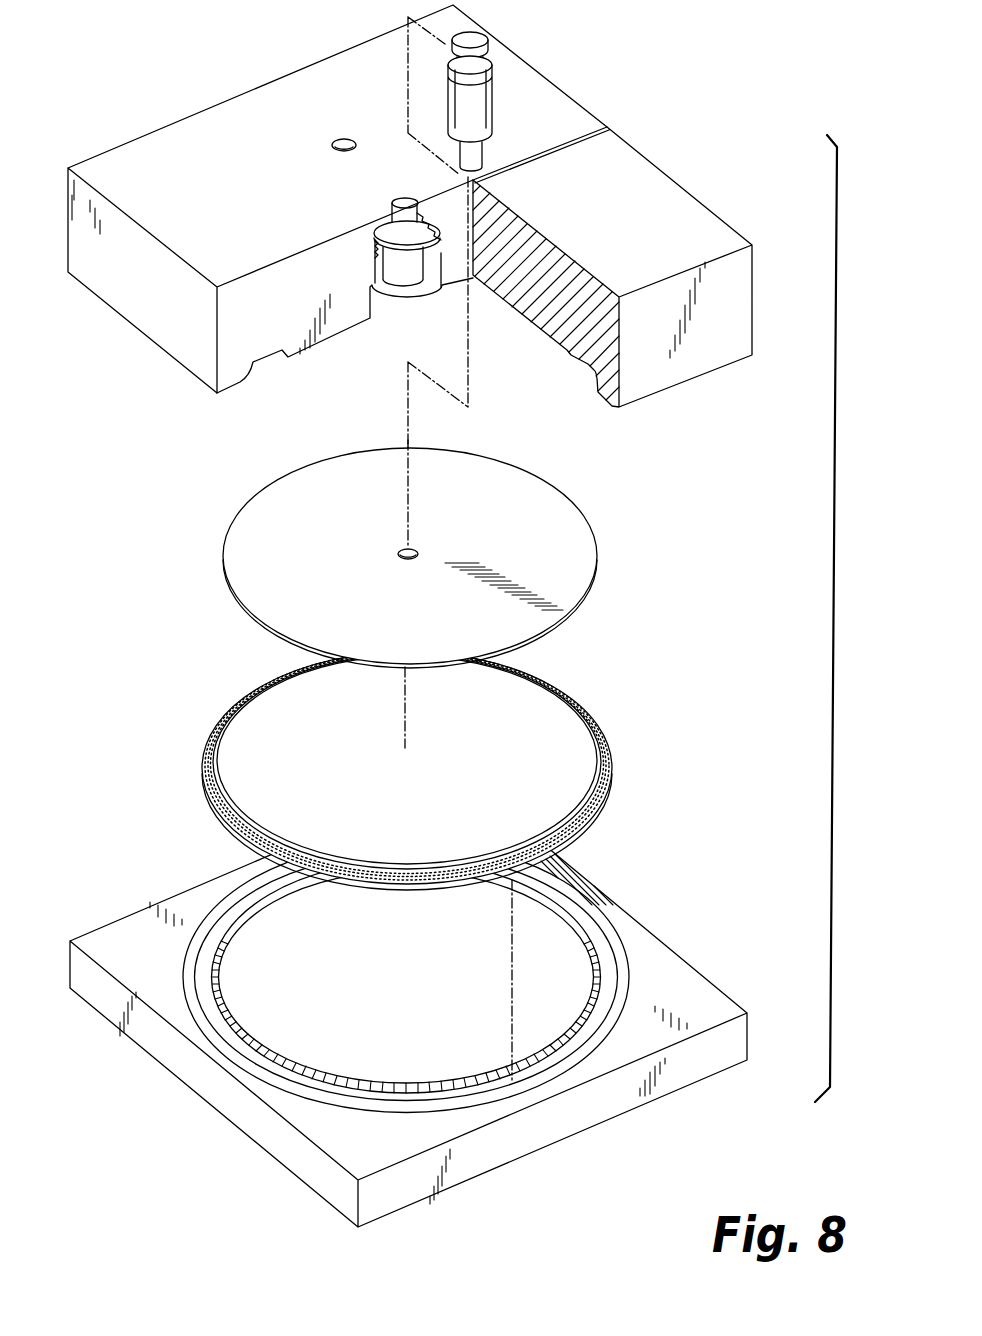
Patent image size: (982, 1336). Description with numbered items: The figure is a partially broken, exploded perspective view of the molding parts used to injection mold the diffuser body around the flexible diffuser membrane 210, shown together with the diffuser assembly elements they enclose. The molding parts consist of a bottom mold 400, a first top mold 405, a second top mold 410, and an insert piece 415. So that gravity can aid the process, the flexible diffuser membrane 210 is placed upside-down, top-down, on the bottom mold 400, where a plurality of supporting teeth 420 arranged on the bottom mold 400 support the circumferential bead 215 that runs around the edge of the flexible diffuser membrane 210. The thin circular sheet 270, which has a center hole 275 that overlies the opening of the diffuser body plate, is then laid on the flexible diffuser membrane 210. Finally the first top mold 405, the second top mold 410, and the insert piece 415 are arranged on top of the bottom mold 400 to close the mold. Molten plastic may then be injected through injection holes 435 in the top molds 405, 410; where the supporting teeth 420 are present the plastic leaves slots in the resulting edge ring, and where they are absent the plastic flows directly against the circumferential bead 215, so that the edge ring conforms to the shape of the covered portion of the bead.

The bottom mold 400 is at (408, 1000).
The first top mold 405 is at (337, 199).
The second top mold 410 is at (620, 222).
The insert piece 415 is at (489, 88).
The supporting teeth 420 is at (375, 1080).
The injection holes 435 is at (344, 138).
The thin circular sheet 270 is at (410, 554).
The center hole 275 is at (404, 548).
The flexible diffuser membrane 210 is at (584, 690).
The circumferential bead 215 is at (205, 752).